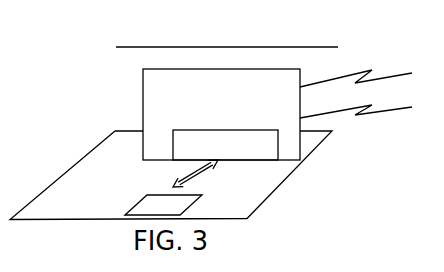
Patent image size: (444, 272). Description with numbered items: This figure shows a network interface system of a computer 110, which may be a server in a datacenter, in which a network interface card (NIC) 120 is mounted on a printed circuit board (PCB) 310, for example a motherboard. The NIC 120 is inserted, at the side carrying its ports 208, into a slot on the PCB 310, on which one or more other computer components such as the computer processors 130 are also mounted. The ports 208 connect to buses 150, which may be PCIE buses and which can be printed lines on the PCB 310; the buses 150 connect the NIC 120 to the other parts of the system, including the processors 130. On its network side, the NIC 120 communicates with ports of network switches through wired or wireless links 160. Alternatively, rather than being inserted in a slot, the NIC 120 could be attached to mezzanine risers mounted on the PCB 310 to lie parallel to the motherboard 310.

The computer 110 is at (227, 31).
The network interface card 120 is at (256, 99).
The ports 208 is at (225, 145).
The links 160 is at (356, 87).
The buses 150 is at (212, 166).
The computer processors 130 is at (163, 205).
The printed circuit board 310 is at (98, 218).